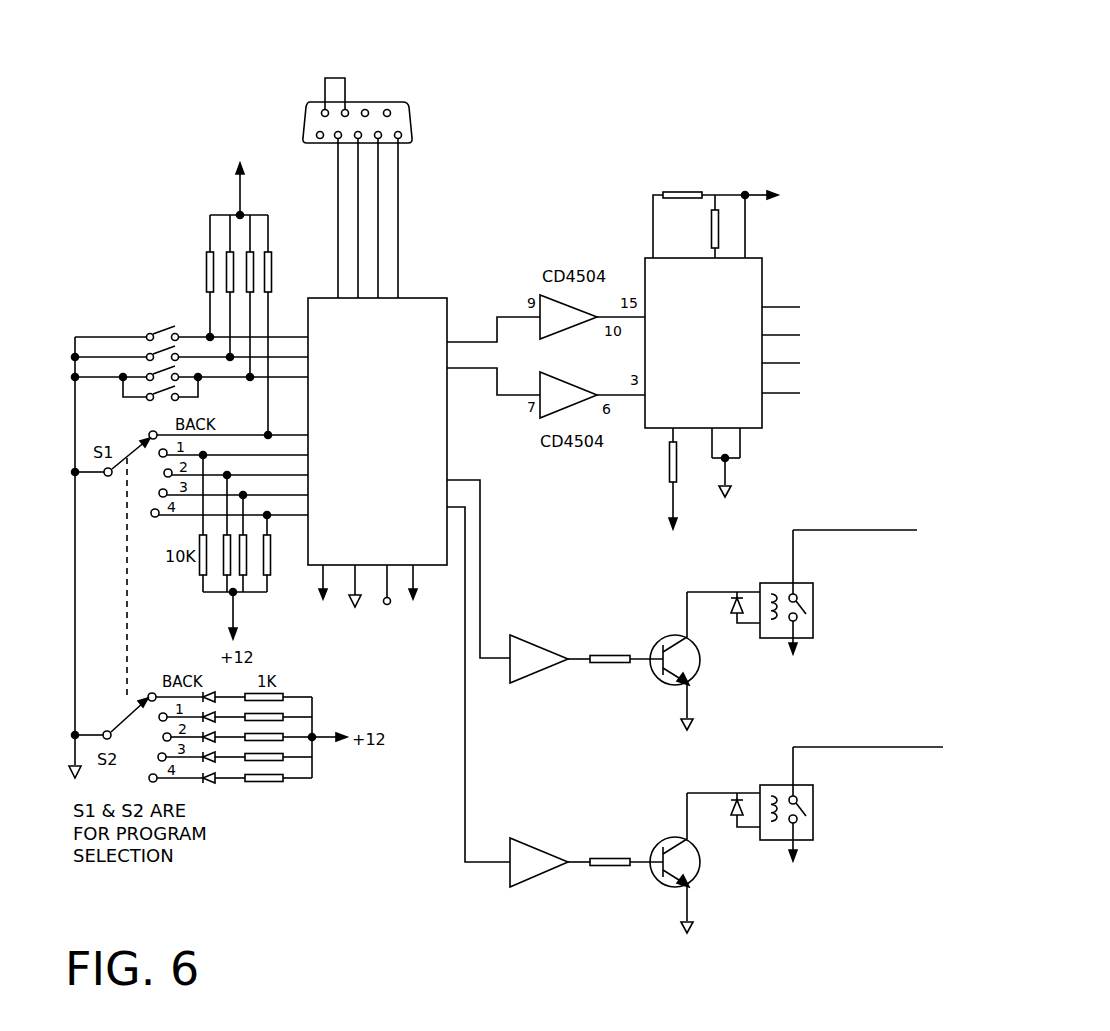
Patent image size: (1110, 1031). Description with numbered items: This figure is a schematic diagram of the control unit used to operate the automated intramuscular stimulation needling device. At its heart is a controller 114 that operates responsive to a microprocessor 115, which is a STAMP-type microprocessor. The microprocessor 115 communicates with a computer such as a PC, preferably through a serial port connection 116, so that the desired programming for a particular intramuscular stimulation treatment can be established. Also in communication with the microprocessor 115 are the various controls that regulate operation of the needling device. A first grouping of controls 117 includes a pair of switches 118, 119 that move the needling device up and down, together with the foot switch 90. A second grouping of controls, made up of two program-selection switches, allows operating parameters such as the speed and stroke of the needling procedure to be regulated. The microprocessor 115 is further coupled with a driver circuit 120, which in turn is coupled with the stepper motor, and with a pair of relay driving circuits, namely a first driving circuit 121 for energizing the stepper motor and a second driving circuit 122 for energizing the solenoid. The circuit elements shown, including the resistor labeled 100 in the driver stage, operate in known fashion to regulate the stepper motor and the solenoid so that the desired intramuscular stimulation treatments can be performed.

The controller 114 is at (172, 112).
The microprocessor 115 is at (425, 297).
The serial port connection 116 is at (408, 93).
The first grouping of controls 117 is at (168, 325).
The switch 118 is at (180, 313).
The switch 119 is at (157, 337).
The foot switch 90 is at (153, 352).
The driver circuit 120 is at (737, 313).
The first driving circuit 121 is at (777, 535).
The second driving circuit 122 is at (778, 745).
The 100 ohm resistor 100 is at (682, 185).